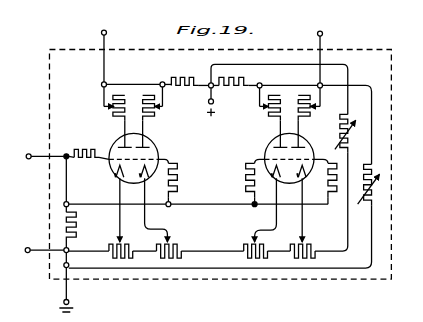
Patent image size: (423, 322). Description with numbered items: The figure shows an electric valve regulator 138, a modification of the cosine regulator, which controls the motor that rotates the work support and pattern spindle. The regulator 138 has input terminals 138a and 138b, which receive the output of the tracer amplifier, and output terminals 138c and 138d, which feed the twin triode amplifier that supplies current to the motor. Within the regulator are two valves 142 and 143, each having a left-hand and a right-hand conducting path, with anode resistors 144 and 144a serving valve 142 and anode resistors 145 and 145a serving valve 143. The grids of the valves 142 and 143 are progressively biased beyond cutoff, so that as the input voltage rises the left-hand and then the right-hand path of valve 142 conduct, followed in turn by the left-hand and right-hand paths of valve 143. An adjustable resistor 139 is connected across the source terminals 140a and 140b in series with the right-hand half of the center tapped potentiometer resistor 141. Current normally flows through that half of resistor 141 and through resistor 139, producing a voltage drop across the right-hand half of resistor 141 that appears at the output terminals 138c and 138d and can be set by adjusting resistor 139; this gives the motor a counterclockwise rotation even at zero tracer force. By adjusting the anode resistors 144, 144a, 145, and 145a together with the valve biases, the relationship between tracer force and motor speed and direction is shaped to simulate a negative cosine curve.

The electric valve regulator 138 is at (390, 47).
The input terminal 138a is at (25, 151).
The input terminal 138b is at (25, 245).
The output terminal 138c is at (100, 30).
The output terminal 138d is at (322, 31).
The adjustable resistor 139 is at (371, 206).
The source terminal 140a is at (212, 99).
The source terminal 140b is at (61, 300).
The center tapped potentiometer resistor 141 is at (207, 68).
The valve 142 is at (157, 144).
The valve 143 is at (266, 144).
The anode resistor 144 is at (110, 118).
The anode resistor 144a is at (153, 117).
The anode resistor 145 is at (267, 118).
The anode resistor 145a is at (303, 113).